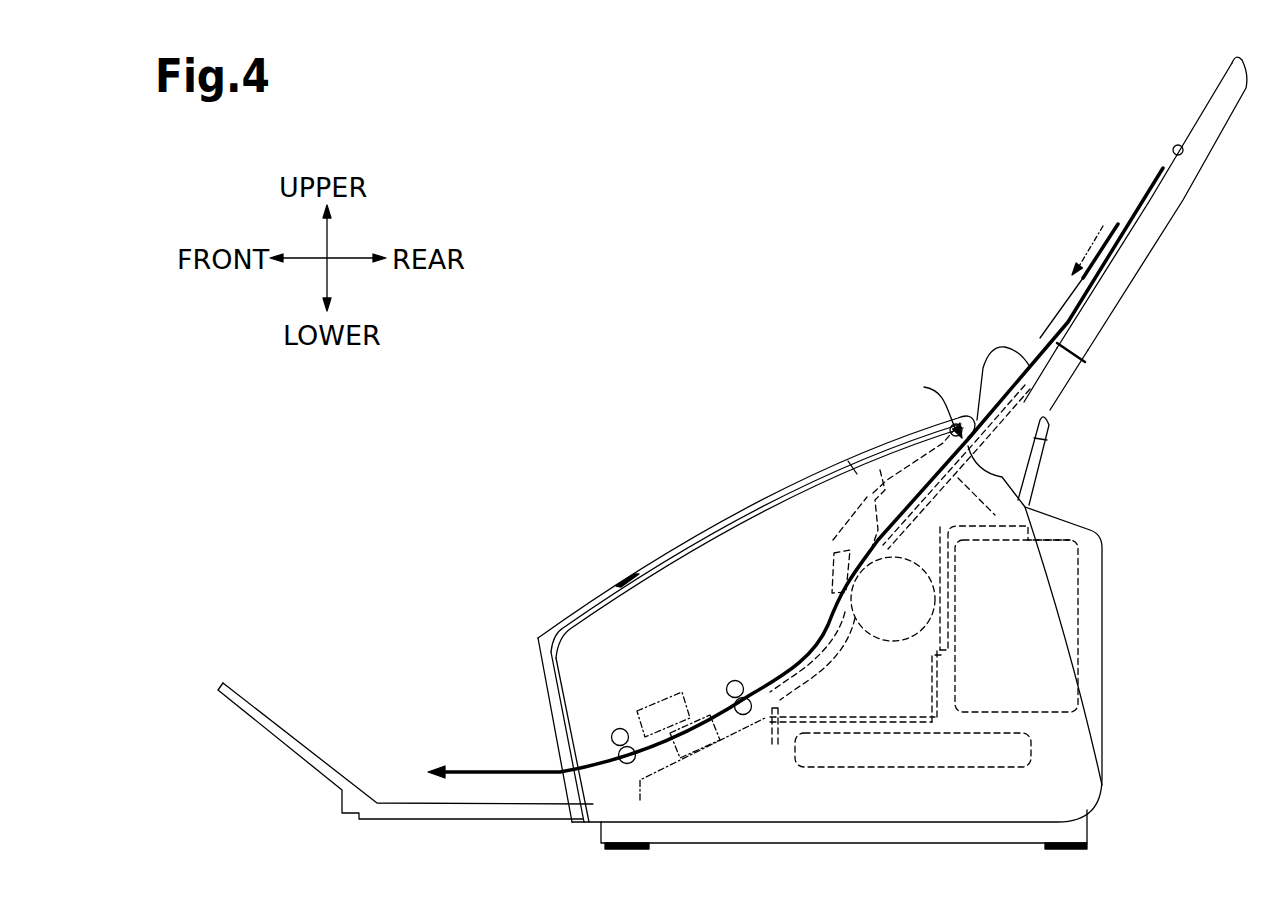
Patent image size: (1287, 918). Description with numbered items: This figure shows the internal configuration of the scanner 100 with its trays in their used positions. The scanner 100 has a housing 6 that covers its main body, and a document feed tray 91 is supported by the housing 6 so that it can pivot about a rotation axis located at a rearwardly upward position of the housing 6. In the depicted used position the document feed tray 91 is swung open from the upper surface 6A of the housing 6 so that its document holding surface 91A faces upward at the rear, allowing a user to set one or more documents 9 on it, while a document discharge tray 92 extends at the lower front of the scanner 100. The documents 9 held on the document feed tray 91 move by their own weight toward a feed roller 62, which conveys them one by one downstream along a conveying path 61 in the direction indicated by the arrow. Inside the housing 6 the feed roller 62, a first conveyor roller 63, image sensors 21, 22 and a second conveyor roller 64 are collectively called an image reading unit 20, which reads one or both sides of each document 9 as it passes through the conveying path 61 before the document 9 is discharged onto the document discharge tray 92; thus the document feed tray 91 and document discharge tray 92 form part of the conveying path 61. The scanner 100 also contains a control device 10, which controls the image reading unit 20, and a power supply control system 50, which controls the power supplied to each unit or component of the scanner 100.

The scanner 100 is at (632, 386).
The housing 6 is at (1102, 709).
The upper surface 6A is at (677, 548).
The document 9 is at (1157, 181).
The document feed tray 91 is at (1147, 279).
The document holding surface 91A is at (1195, 122).
The document discharge tray 92 is at (331, 809).
The power supply control system 50 is at (1016, 626).
The control device 10 is at (913, 750).
The feed roller 62 is at (893, 599).
The conveying path 61 is at (800, 643).
The image reading unit 20 is at (692, 662).
The image sensor 21 is at (660, 693).
The image sensor 22 is at (697, 760).
The first conveyor roller 63 is at (733, 681).
The second conveyor roller 64 is at (618, 729).